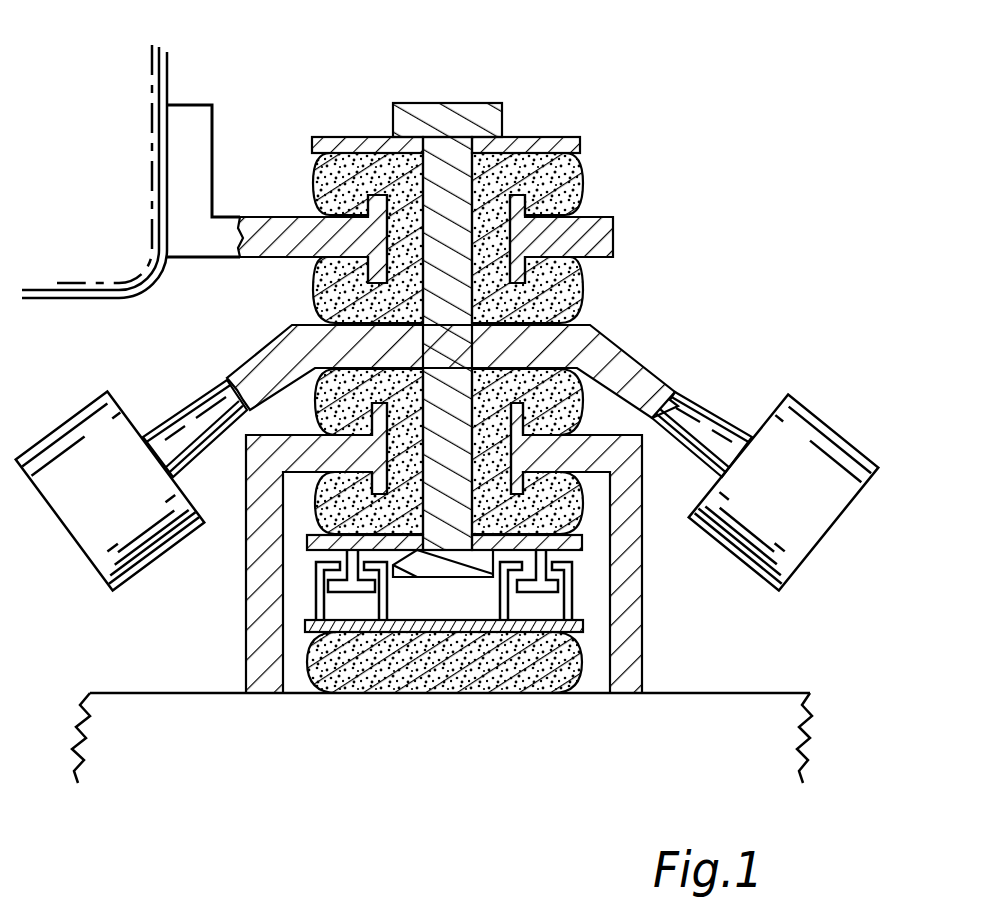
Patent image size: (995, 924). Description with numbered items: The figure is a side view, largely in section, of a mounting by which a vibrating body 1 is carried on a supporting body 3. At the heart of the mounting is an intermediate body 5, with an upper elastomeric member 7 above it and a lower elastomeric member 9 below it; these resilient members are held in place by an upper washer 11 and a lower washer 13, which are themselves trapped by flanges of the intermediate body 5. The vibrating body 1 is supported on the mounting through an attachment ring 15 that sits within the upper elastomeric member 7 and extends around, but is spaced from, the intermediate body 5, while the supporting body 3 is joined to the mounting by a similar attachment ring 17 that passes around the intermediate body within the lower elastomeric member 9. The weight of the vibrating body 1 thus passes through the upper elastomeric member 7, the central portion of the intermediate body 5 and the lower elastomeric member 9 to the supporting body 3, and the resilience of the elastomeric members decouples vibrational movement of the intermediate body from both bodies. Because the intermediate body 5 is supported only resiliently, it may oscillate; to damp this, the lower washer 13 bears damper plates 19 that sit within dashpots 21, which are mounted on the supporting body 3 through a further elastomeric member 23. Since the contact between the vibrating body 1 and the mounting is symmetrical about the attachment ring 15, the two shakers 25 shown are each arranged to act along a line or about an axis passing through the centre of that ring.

The vibrating body 1 is at (73, 187).
The supporting body 3 is at (387, 778).
The intermediate body 5 is at (597, 355).
The upper elastomeric member 7 is at (581, 187).
The lower elastomeric member 9 is at (580, 410).
The upper washer 11 is at (556, 133).
The lower washer 13 is at (590, 550).
The attachment ring 15 is at (318, 188).
The attachment ring 17 is at (337, 480).
The damper plate 19 is at (538, 592).
The dashpot 21 is at (497, 597).
The further elastomeric member 23 is at (308, 681).
The shaker 25 is at (75, 430).